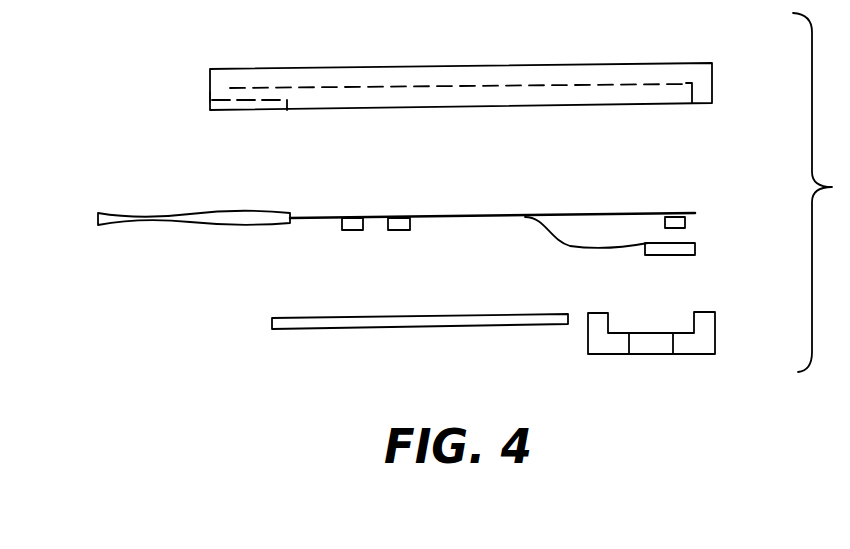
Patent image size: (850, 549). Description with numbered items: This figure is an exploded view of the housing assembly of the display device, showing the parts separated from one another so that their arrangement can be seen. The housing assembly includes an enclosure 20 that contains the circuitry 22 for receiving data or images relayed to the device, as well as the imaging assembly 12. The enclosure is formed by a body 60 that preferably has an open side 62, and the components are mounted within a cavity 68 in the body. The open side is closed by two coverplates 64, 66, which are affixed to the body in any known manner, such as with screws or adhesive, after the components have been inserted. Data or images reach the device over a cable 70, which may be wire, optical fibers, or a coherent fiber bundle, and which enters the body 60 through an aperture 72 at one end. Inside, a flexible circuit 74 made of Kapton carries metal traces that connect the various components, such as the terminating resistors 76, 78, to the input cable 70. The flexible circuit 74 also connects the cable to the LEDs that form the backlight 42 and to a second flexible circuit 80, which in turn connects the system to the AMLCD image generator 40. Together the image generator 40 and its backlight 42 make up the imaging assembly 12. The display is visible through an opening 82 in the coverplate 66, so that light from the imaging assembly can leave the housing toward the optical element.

The imaging assembly 12 is at (713, 238).
The enclosure 20 is at (518, 70).
The circuitry 22 is at (567, 188).
The AMLCD image generator 40 is at (668, 249).
The backlight 42 is at (685, 222).
The body 60 is at (277, 78).
The open side 62 is at (673, 104).
The coverplate 64 is at (437, 318).
The coverplate 66 is at (710, 328).
The cavity 68 is at (450, 97).
The cable 70 is at (178, 225).
The aperture 72 is at (212, 99).
The flexible circuit 74 is at (431, 216).
The terminating resistor 76 is at (352, 231).
The terminating resistor 78 is at (400, 231).
The second flexible circuit 80 is at (562, 246).
The opening 82 is at (643, 353).